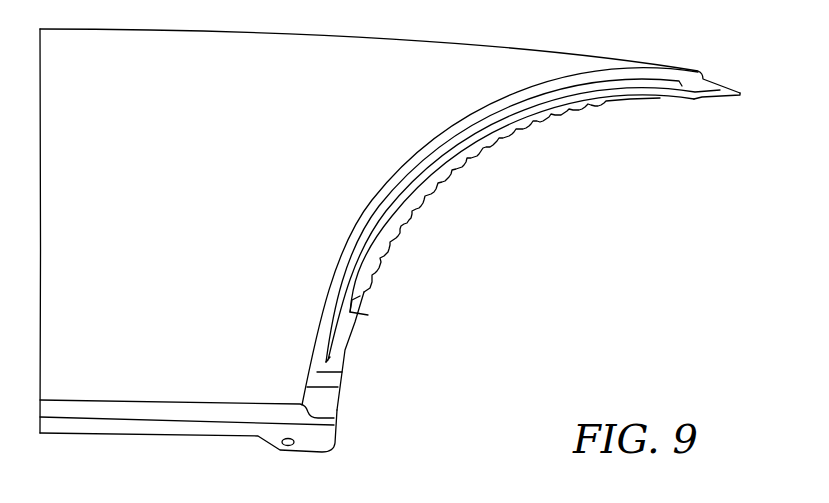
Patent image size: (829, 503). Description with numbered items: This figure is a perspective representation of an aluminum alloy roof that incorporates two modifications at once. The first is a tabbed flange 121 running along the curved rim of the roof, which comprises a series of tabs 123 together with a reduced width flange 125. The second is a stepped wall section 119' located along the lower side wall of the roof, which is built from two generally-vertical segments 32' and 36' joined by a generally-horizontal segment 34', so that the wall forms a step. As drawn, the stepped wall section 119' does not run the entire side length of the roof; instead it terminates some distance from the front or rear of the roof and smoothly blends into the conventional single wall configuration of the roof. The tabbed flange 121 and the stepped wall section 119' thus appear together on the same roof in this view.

The tabbed flange 121 is at (528, 225).
The tabs 123 is at (500, 147).
The reduced width flange 125 is at (535, 122).
The stepped wall section 119' is at (442, 358).
The generally-vertical segment 32' is at (405, 324).
The generally-horizontal segment 34' is at (384, 352).
The generally-vertical segment 36' is at (375, 381).